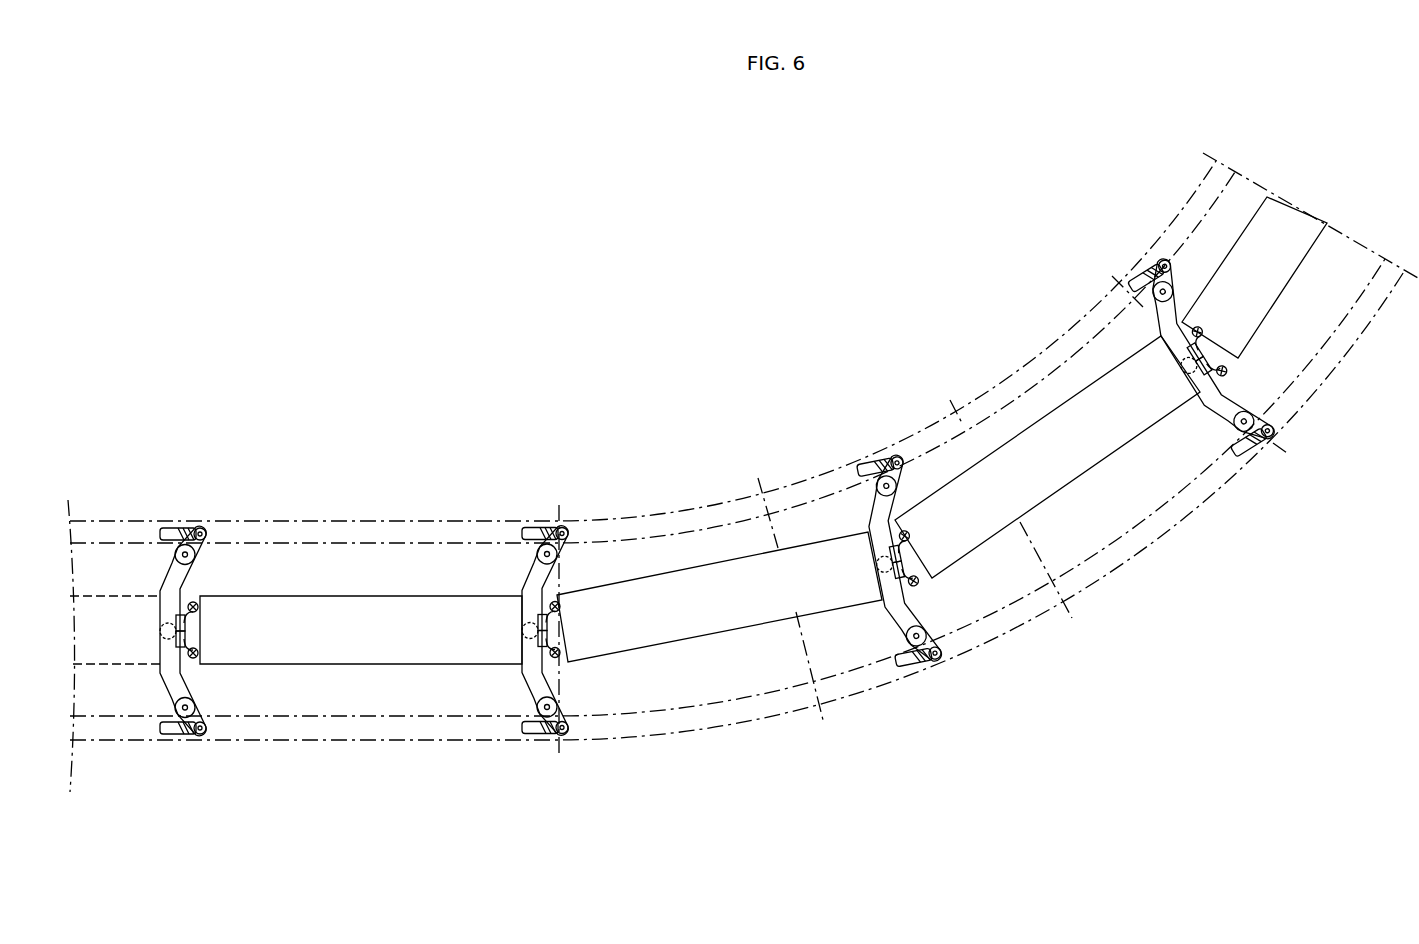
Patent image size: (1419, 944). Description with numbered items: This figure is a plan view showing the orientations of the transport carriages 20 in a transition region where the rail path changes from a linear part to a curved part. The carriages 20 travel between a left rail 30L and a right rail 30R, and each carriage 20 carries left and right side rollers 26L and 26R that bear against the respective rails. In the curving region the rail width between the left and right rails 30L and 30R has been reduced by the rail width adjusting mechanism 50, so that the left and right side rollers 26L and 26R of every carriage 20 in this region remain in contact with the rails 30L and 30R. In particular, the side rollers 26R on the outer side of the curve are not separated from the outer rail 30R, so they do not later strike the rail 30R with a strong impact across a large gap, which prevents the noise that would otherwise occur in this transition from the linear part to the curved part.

The transport carriage 20 is at (407, 678).
The left side roller 26L is at (903, 478).
The right side roller 26R is at (905, 626).
The left rail 30L is at (288, 521).
The right rail 30R is at (332, 742).
The rail width adjusting mechanism 50 is at (1149, 322).